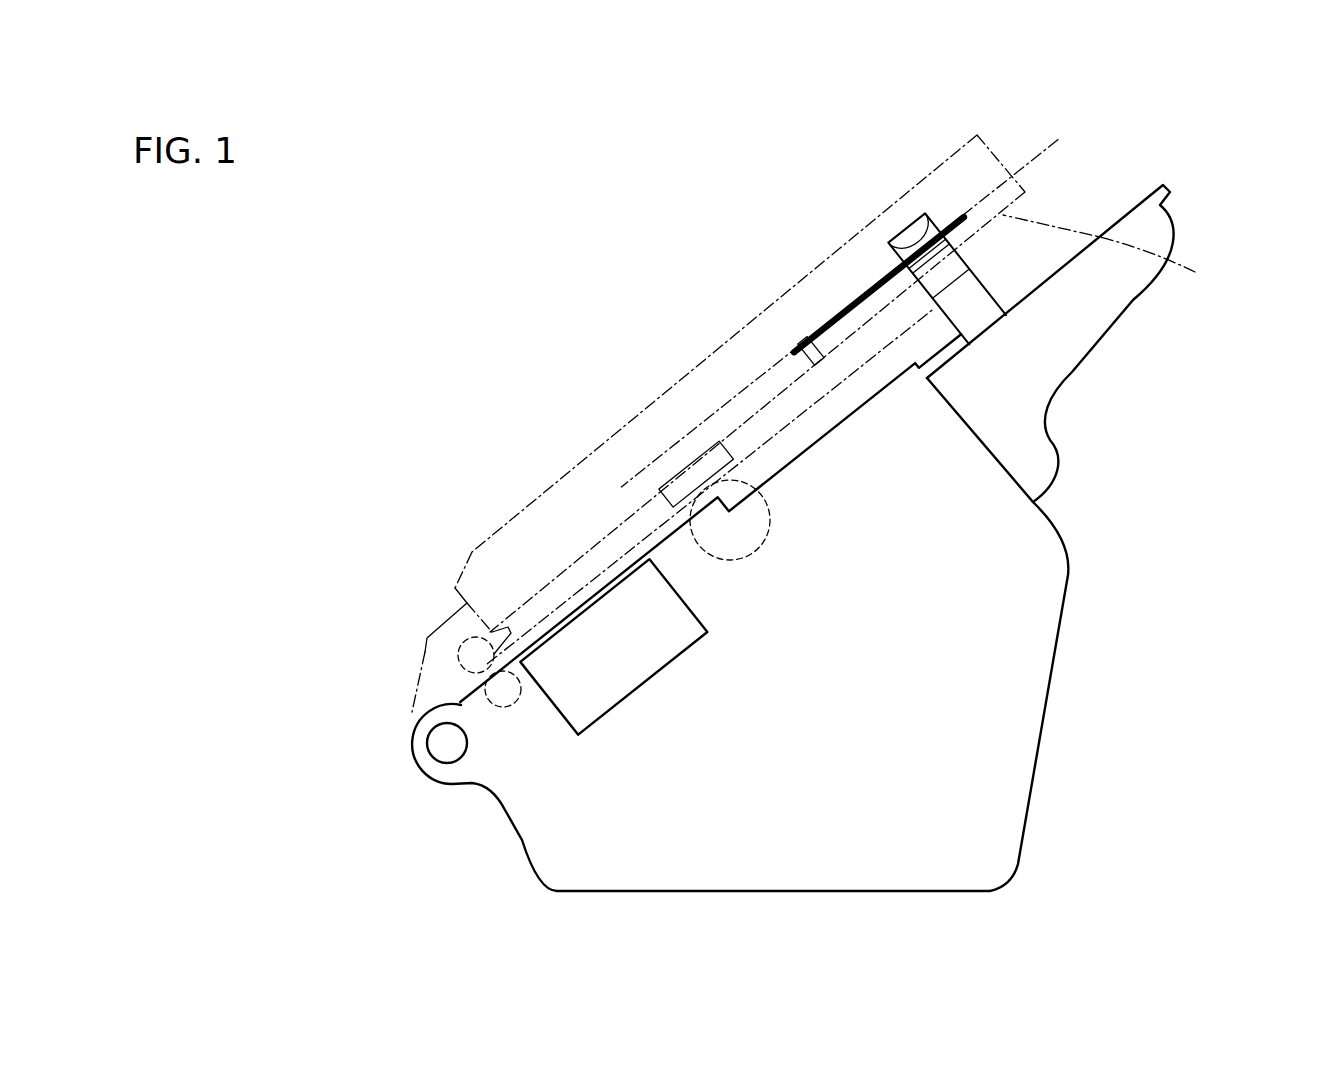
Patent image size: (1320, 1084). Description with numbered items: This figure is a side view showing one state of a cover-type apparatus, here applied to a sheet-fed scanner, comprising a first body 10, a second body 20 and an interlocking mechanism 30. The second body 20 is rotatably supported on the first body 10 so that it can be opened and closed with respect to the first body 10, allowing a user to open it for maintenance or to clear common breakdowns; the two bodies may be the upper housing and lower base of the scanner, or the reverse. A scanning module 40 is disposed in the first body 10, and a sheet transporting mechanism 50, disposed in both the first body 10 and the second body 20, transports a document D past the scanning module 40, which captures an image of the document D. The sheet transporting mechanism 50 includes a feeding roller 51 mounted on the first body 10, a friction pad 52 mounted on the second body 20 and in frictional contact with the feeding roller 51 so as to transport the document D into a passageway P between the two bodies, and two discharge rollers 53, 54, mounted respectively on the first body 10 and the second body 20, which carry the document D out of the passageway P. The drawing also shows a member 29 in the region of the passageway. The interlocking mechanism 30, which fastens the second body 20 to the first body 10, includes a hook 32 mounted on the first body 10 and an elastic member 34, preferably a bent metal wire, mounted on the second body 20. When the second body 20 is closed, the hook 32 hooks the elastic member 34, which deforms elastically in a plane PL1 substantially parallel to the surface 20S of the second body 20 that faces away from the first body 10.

The first body 10 is at (1070, 552).
The second body 20 is at (678, 383).
The surface of the second body 20S is at (1122, 252).
The plane PL1 is at (1030, 162).
The guide member 29 is at (797, 342).
The document D is at (778, 417).
The passageway P is at (592, 568).
The interlocking mechanism 30 is at (618, 239).
The hook 32 is at (903, 226).
The elastic member 34 is at (865, 300).
The scanning module 40 is at (623, 672).
The sheet transporting mechanism 50 is at (595, 561).
The feeding roller 51 is at (763, 548).
The friction pad 52 is at (672, 478).
The discharge roller 53 is at (508, 707).
The discharge roller 54 is at (462, 643).